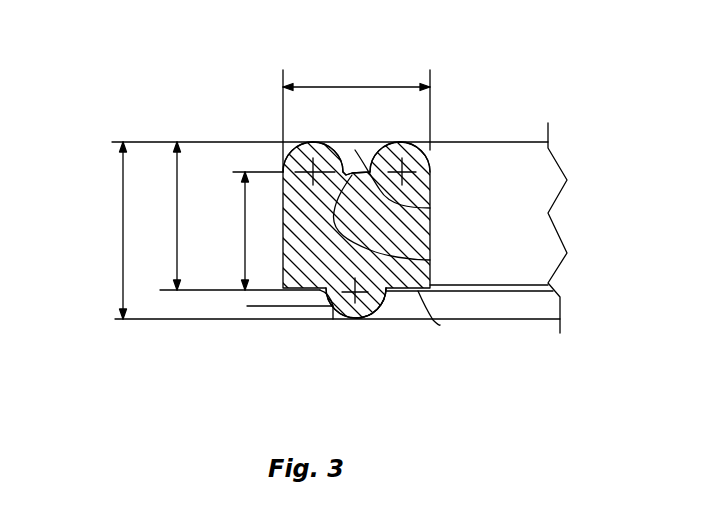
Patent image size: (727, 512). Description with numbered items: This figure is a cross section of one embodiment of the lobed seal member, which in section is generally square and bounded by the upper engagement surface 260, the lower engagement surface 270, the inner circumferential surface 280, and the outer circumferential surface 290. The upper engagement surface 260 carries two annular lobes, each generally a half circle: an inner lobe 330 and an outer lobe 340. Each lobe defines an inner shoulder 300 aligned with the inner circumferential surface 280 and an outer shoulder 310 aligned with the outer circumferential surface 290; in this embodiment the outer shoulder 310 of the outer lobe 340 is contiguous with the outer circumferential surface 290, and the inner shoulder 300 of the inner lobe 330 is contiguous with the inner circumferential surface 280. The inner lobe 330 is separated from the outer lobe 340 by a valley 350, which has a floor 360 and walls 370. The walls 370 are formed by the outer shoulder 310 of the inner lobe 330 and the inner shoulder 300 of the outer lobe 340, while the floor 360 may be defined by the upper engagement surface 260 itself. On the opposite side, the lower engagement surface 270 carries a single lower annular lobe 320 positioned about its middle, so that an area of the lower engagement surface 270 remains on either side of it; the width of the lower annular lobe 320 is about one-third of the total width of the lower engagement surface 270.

The upper engagement surface 260 is at (430, 208).
The lower engagement surface 270 is at (440, 325).
The inner circumferential surface 280 is at (432, 232).
The outer circumferential surface 290 is at (283, 241).
The inner shoulder 300 is at (345, 170).
The outer shoulder 310 is at (288, 166).
The lower annular lobe 320 is at (345, 318).
The inner lobe 330 is at (380, 168).
The outer lobe 340 is at (313, 142).
The valley 350 is at (387, 177).
The floor 360 is at (430, 260).
The walls 370 is at (370, 173).